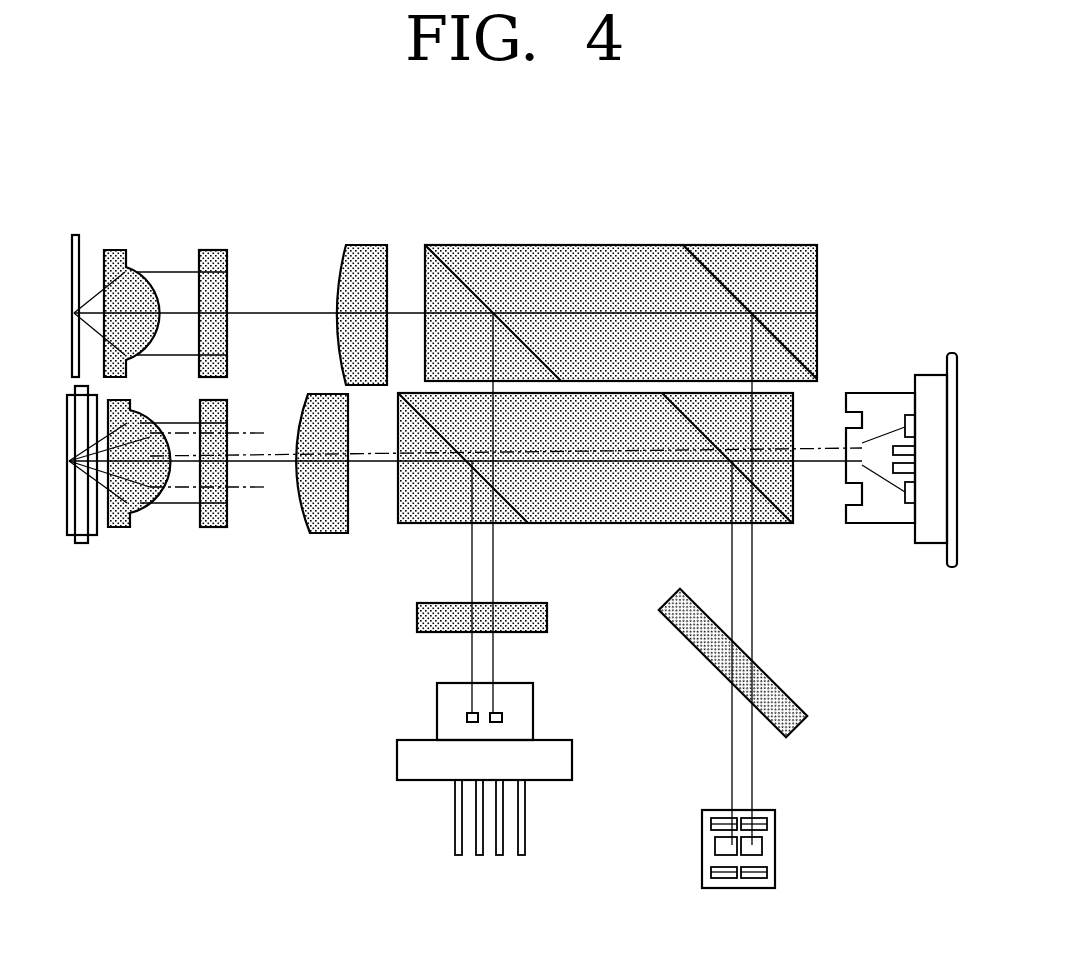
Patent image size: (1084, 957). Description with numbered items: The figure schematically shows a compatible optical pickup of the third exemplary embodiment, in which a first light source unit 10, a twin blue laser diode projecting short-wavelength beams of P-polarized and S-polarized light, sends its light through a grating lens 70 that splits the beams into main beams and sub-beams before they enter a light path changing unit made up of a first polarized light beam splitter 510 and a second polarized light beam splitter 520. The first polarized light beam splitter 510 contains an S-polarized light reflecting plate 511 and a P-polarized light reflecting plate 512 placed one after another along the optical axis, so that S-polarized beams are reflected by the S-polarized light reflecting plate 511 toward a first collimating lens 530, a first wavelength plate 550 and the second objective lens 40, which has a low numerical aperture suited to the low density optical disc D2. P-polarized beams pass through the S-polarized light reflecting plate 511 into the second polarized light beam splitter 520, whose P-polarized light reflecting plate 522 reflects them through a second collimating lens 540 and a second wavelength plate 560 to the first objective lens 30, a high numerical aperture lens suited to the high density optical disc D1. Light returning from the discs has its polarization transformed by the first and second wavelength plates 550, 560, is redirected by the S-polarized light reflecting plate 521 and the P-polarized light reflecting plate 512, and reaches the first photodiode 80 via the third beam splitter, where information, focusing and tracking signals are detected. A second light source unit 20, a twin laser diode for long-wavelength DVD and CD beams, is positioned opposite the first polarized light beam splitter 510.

The optical information recording medium D1 is at (73, 233).
The optical information recording medium D2 is at (78, 536).
The first objective lens 30 is at (116, 250).
The second objective lens 40 is at (118, 528).
The second wavelength plate 560 is at (213, 250).
The first wavelength plate 550 is at (210, 528).
The second collimating lens 540 is at (352, 248).
The first collimating lens 530 is at (312, 535).
The second polarized light beam splitter 520 is at (573, 240).
The P-polarized light reflecting plate 522 is at (466, 284).
The S-polarized light reflecting plate 521 is at (711, 268).
The first polarized light beam splitter 510 is at (597, 538).
The S-polarized light reflecting plate 511 is at (443, 437).
The P-polarized light reflecting plate 512 is at (758, 490).
The grating lens 70 is at (420, 620).
The first light source unit 10 is at (372, 758).
The first photodiode 80 is at (777, 857).
The second light source unit 20 is at (908, 556).